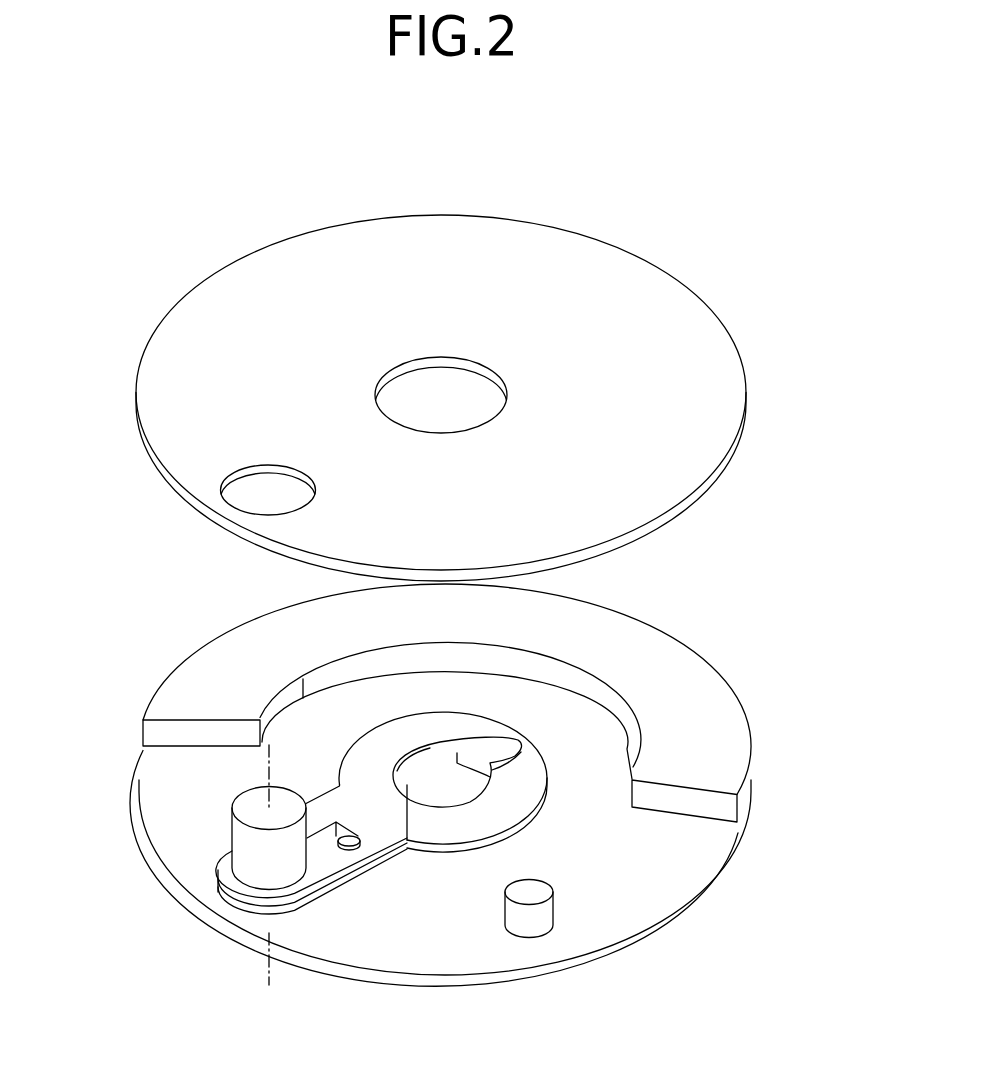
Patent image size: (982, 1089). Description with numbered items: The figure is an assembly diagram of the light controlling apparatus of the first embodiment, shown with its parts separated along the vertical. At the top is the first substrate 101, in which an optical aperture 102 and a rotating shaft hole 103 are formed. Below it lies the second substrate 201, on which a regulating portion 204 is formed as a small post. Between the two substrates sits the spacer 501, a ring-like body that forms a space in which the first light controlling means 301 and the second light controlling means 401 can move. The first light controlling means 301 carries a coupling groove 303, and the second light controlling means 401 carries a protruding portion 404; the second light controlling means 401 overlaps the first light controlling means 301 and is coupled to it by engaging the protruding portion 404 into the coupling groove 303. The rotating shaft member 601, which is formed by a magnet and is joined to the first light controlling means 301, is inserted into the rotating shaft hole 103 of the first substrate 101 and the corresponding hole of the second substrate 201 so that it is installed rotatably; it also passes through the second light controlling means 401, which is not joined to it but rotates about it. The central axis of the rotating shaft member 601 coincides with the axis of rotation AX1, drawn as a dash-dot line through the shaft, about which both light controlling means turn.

The first substrate 101 is at (680, 352).
The optical aperture 102 is at (488, 403).
The rotating shaft hole 103 is at (253, 518).
The second substrate 201 is at (625, 866).
The regulating portion 204 is at (553, 903).
The first light controlling means 301 is at (390, 730).
The coupling groove 303 is at (336, 826).
The second light controlling means 401 is at (520, 779).
The protruding portion 404 is at (374, 843).
The spacer 501 is at (658, 676).
The rotating shaft member 601 is at (253, 855).
The axis of rotation AX1 is at (268, 960).